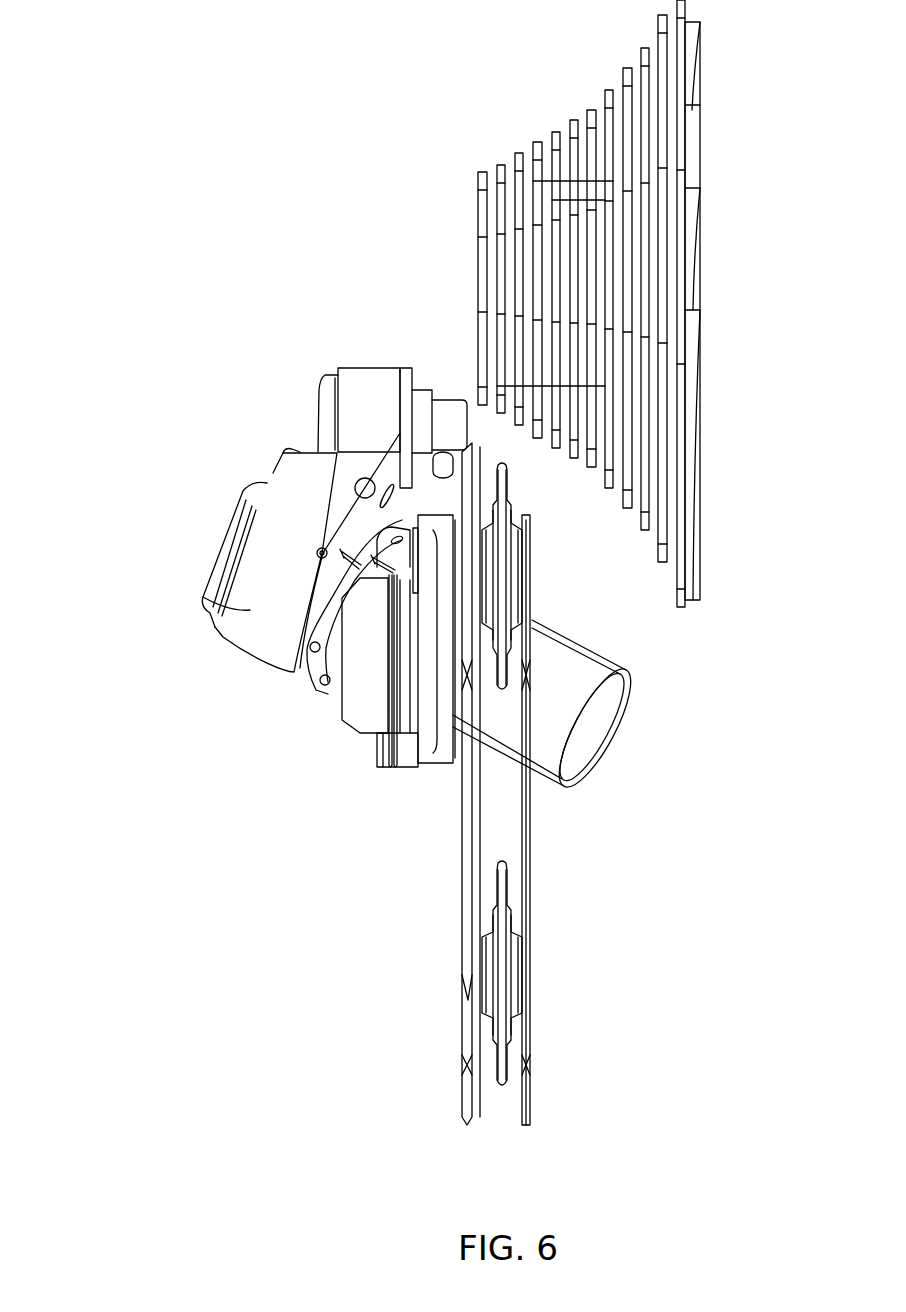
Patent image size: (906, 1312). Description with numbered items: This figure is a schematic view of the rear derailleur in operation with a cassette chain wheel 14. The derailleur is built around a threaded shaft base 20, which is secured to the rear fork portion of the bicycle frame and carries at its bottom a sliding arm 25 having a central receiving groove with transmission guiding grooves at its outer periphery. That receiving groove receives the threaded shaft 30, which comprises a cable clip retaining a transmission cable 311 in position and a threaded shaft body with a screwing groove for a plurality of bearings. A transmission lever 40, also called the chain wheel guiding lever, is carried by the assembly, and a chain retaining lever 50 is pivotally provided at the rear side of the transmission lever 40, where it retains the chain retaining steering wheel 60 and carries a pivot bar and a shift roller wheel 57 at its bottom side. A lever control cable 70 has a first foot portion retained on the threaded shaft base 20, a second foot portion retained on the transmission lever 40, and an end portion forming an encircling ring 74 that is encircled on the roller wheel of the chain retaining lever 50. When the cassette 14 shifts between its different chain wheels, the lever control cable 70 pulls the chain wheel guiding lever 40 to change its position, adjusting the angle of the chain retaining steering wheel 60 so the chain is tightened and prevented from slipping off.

The cassette chain wheel 14 is at (493, 397).
The threaded shaft base 20 is at (272, 416).
The sliding arm 25 is at (580, 642).
The threaded shaft 30 is at (205, 583).
The transmission cable 311 is at (223, 557).
The transmission lever 40 is at (250, 652).
The chain retaining lever 50 is at (435, 767).
The shift roller wheel 57 is at (403, 767).
The chain retaining steering wheel 60 is at (533, 863).
The lever control cable 70 is at (388, 648).
The encircling ring 74 is at (373, 750).